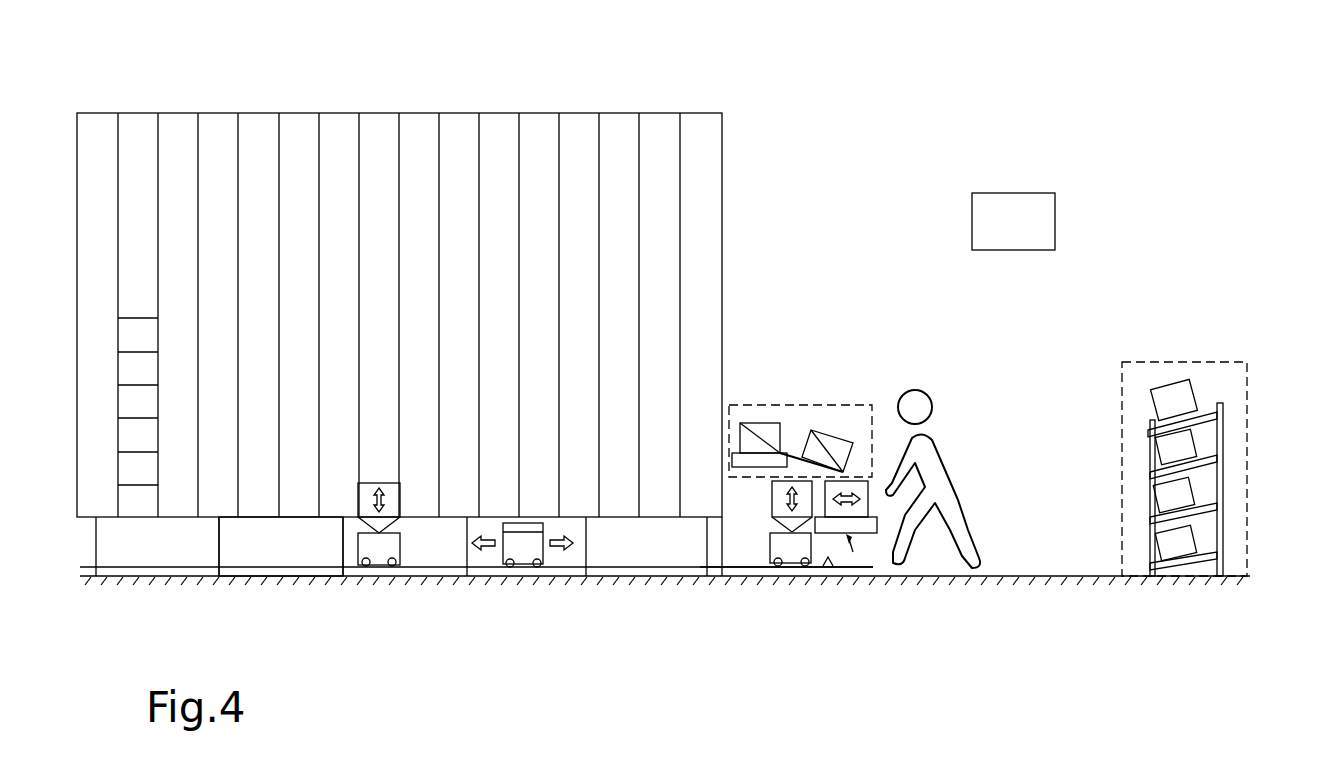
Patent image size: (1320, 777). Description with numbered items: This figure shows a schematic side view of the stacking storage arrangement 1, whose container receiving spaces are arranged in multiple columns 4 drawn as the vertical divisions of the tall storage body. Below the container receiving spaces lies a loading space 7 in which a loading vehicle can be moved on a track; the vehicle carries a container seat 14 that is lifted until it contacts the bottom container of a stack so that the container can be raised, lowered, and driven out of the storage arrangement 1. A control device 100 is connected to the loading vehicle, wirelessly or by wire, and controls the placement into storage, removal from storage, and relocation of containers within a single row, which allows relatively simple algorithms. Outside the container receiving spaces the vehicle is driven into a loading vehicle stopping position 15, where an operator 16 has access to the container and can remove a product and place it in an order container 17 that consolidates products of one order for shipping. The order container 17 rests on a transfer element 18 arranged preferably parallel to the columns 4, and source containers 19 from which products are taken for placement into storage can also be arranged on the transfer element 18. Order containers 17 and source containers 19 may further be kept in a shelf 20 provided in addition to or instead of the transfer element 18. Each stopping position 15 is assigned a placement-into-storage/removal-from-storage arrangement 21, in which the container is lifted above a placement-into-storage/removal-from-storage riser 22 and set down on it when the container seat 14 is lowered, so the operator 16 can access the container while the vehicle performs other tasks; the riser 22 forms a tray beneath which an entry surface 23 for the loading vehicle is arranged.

The stacking storage arrangement 1 is at (686, 72).
The column 4 is at (219, 143).
The loading space 7 is at (296, 553).
The container seat 14 is at (512, 525).
The loading vehicle stopping position 15 is at (765, 557).
The operator 16 is at (935, 475).
The order container 17 is at (767, 433).
The transfer element 18 is at (747, 466).
The source container 19 is at (827, 451).
The shelf 20 is at (1218, 463).
The placement-into-storage/removal-from-storage arrangement 21 is at (853, 553).
The placement-into-storage/removal-from-storage riser 22 is at (870, 535).
The entry surface 23 is at (829, 566).
The control device 100 is at (1031, 237).